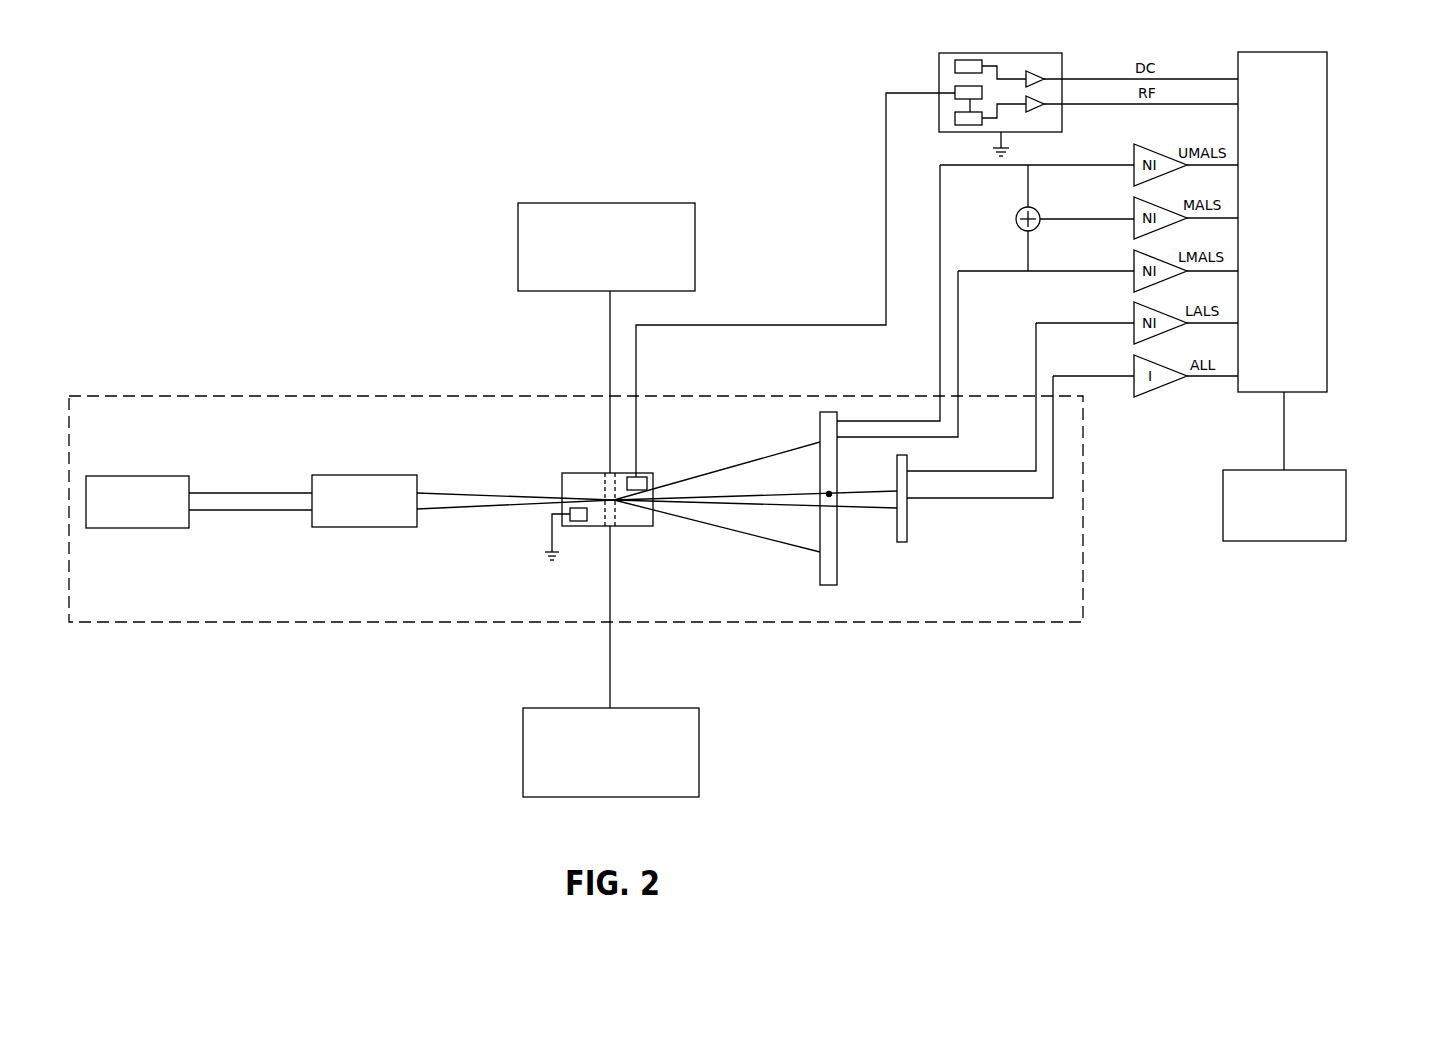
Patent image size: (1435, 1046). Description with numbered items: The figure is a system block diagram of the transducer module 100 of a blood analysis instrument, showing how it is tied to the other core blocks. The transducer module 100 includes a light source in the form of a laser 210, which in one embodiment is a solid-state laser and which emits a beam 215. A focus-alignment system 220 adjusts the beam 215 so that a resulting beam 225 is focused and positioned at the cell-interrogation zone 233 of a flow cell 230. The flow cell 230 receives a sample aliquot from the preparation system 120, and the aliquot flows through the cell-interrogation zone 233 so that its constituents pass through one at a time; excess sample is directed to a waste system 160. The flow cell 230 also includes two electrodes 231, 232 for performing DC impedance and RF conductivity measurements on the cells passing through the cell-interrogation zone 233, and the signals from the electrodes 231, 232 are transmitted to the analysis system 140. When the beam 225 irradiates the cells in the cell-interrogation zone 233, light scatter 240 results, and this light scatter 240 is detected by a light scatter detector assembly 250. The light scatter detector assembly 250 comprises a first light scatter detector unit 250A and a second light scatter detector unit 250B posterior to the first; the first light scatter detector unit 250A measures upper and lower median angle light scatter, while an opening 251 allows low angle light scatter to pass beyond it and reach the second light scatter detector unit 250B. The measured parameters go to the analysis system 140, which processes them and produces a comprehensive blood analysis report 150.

The transducer module 100 is at (1060, 622).
The preparation system 120 is at (668, 797).
The analysis system 140 is at (1327, 112).
The blood analysis report 150 is at (1346, 495).
The waste system 160 is at (647, 203).
The laser 210 is at (160, 528).
The beam 215 is at (242, 500).
The focus-alignment system 220 is at (382, 528).
The beam 225 is at (440, 500).
The flow cell 230 is at (745, 332).
The electrode 231 is at (580, 521).
The electrode 232 is at (653, 478).
The cell-interrogation zone 233 is at (608, 493).
The light scatter 240 is at (740, 475).
The light scatter detector assembly 250 is at (901, 540).
The first light scatter detector unit 250A is at (837, 585).
The second light scatter detector unit 250B is at (907, 542).
The opening 251 is at (838, 490).